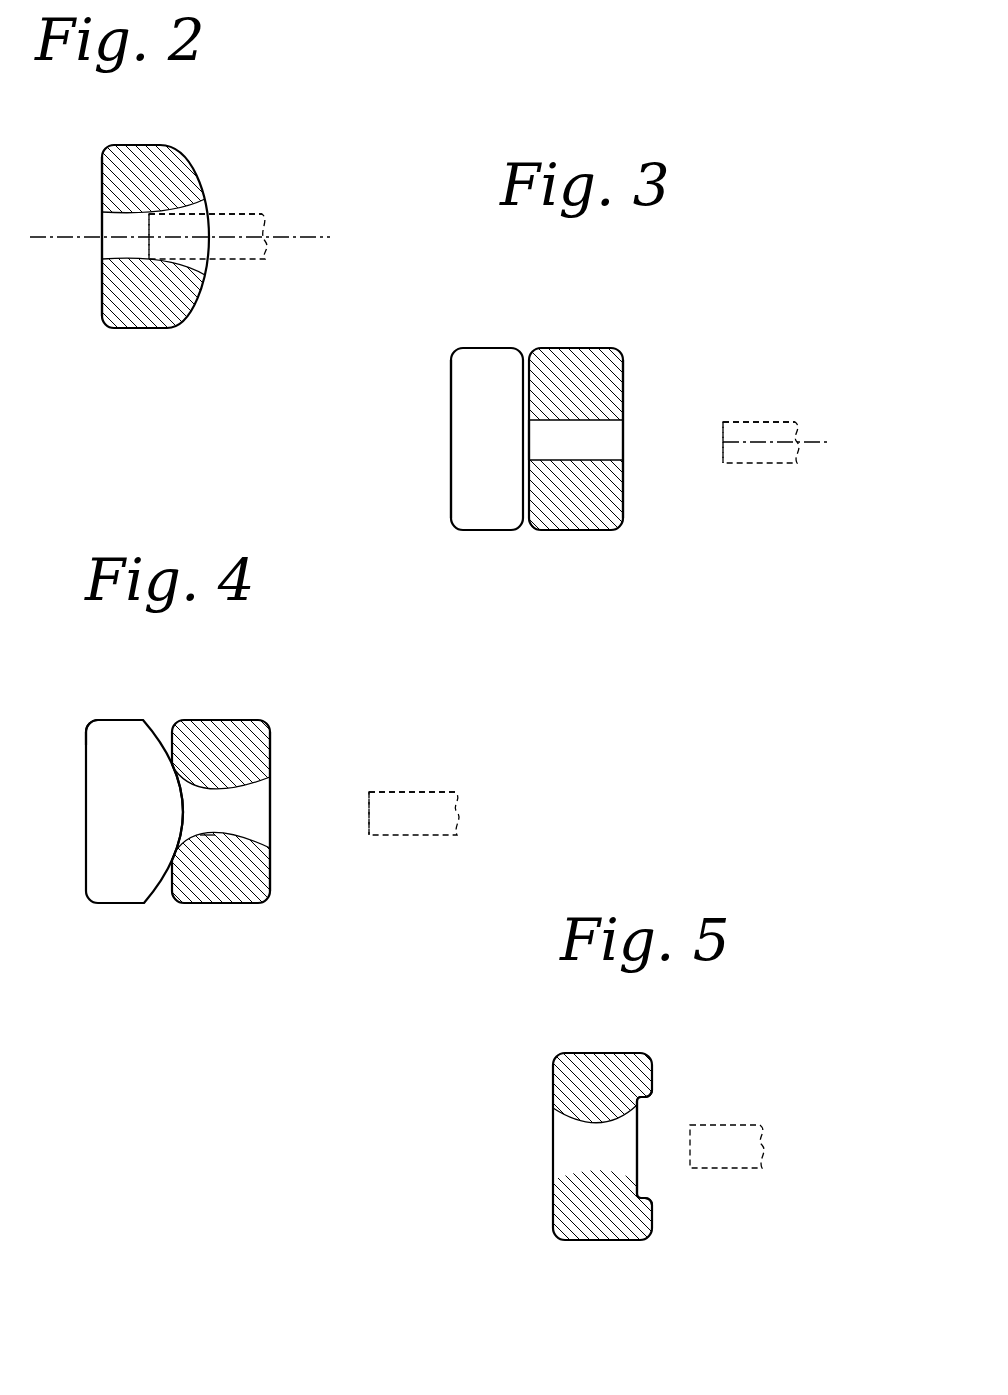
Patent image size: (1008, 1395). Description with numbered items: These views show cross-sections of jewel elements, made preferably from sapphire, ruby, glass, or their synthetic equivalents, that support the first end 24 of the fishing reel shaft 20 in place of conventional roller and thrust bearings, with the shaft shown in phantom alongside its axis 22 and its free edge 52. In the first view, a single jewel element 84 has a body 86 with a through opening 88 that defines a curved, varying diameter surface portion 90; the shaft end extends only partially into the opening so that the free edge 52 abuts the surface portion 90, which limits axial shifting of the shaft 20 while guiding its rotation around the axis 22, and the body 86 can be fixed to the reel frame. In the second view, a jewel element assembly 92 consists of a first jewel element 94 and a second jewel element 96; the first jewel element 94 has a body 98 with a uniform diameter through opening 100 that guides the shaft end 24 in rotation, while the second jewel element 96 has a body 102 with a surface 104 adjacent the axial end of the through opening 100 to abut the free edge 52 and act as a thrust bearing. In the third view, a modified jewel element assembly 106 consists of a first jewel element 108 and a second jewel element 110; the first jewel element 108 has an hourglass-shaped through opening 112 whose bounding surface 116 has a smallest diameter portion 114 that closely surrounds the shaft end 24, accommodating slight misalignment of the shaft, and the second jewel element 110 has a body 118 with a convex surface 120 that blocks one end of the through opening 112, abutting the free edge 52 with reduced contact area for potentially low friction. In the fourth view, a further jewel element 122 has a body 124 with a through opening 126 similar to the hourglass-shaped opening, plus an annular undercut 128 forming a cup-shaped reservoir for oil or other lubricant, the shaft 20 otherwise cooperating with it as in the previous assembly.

In FIG. 2, the shaft 20 is at (250, 253).
In FIG. 3, the shaft 20 is at (722, 442).
In FIG. 4, the shaft 20 is at (395, 800).
In FIG. 5, the shaft 20 is at (715, 1157).
In FIG. 2, the axis 22 is at (305, 228).
In FIG. 3, the axis 22 is at (813, 433).
In FIG. 2, the first end 24 is at (235, 213).
In FIG. 3, the first end 24 is at (752, 432).
In FIG. 4, the first end 24 is at (432, 805).
In FIG. 2, the free edge 52 is at (149, 216).
In FIG. 3, the free edge 52 is at (725, 462).
In FIG. 4, the free edge 52 is at (369, 795).
In FIG. 2, the jewel element 84 is at (174, 144).
In FIG. 2, the body 86 is at (102, 170).
In FIG. 2, the through opening 88 is at (127, 214).
In FIG. 2, the surface portion 90 is at (202, 263).
In FIG. 3, the jewel element assembly 92 is at (561, 391).
In FIG. 3, the first jewel element 94 is at (621, 351).
In FIG. 3, the second jewel element 96 is at (487, 347).
In FIG. 3, the body 98 is at (623, 393).
In FIG. 3, the through opening 100 is at (587, 422).
In FIG. 3, the body 102 is at (451, 437).
In FIG. 3, the surface 104 is at (521, 436).
In FIG. 4, the jewel element assembly 106 is at (269, 718).
In FIG. 4, the first jewel element 108 is at (272, 747).
In FIG. 4, the second jewel element 110 is at (124, 730).
In FIG. 4, the through opening 112 is at (207, 792).
In FIG. 4, the smallest diameter portion 114 is at (240, 843).
In FIG. 4, the surface 116 is at (202, 835).
In FIG. 4, the body 118 is at (98, 720).
In FIG. 4, the convex surface 120 is at (183, 770).
In FIG. 5, the jewel element 122 is at (655, 1056).
In FIG. 5, the body 124 is at (587, 1240).
In FIG. 5, the through opening 126 is at (575, 1122).
In FIG. 5, the annular undercut 128 is at (648, 1097).